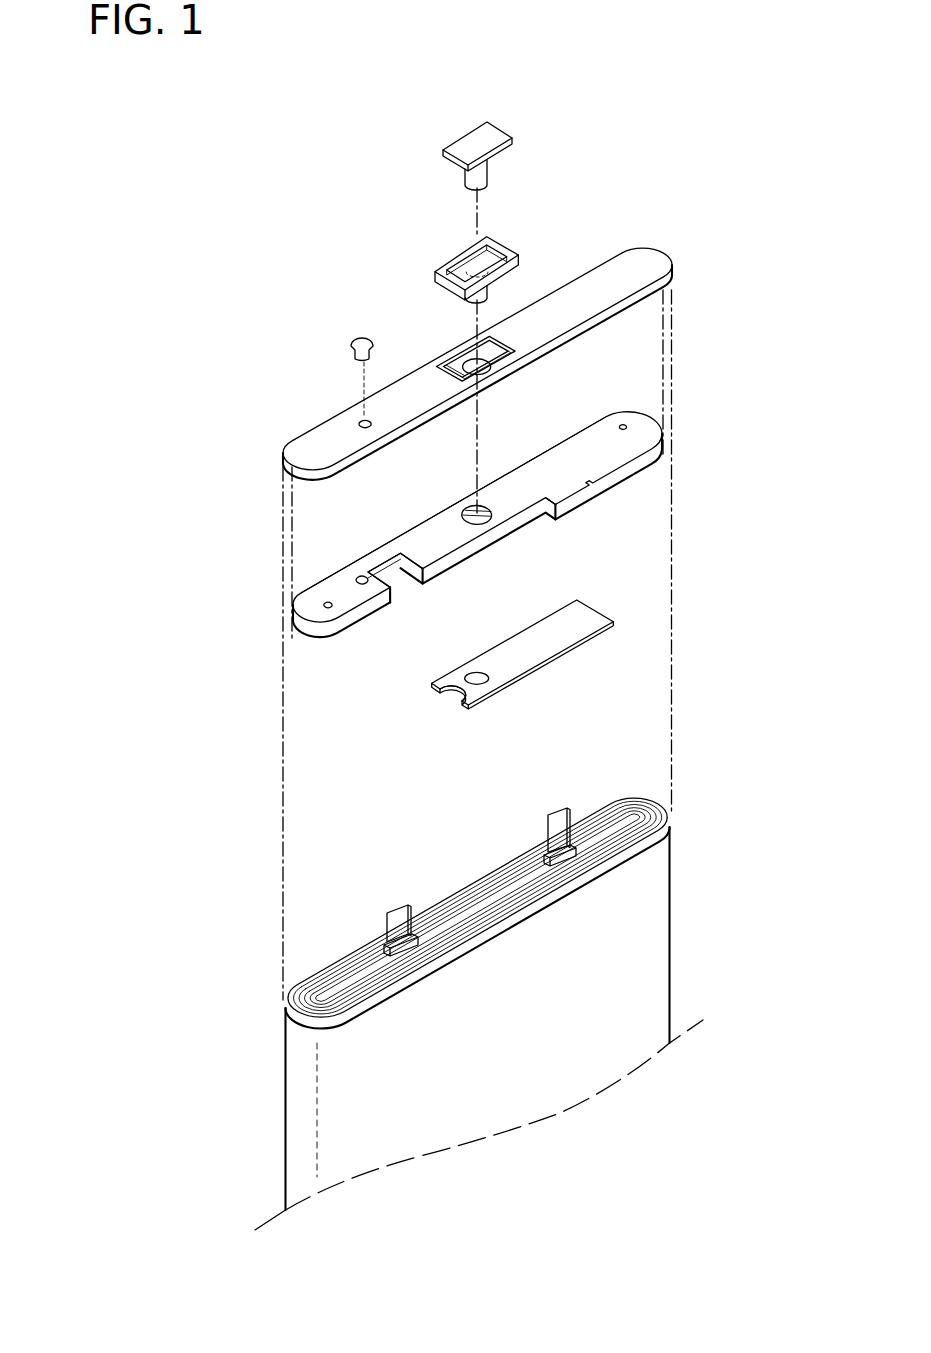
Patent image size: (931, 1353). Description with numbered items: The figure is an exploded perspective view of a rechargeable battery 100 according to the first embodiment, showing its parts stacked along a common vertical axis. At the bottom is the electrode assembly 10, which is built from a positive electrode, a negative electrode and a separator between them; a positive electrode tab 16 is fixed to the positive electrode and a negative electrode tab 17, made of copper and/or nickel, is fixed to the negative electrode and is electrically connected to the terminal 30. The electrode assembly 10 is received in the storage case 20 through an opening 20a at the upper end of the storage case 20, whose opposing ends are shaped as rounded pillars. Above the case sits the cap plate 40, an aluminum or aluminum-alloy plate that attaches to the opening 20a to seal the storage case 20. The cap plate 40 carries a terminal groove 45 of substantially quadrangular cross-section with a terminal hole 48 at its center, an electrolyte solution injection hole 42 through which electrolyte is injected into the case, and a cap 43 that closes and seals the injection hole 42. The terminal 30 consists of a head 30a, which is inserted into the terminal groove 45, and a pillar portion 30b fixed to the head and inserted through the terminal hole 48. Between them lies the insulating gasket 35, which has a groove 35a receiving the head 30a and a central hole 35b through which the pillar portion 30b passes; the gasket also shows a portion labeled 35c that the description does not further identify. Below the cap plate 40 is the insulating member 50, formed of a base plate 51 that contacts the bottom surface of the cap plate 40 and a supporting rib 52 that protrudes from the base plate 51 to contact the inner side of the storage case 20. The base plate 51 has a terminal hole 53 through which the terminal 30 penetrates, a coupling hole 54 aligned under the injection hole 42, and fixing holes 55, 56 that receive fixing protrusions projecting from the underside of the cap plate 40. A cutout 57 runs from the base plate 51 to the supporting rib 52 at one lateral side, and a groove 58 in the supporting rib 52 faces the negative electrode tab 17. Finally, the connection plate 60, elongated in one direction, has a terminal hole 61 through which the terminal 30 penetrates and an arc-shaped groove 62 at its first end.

The rechargeable battery 100 is at (284, 128).
The electrode assembly 10 is at (484, 907).
The positive electrode tab 16 is at (387, 915).
The negative electrode tab 17 is at (548, 814).
The storage case 20 is at (514, 1018).
The opening 20a is at (632, 858).
The terminal 30 is at (485, 144).
The head 30a is at (490, 128).
The pillar portion 30b is at (482, 170).
The insulating gasket 35 is at (469, 236).
The groove 35a is at (492, 252).
The hole 35b is at (444, 268).
The gasket protrusion 35c is at (490, 293).
The cap plate 40 is at (502, 334).
The electrolyte solution injection hole 42 is at (364, 421).
The cap 43 is at (352, 343).
The terminal groove 45 is at (436, 371).
The terminal hole 48 is at (488, 370).
The insulating member 50 is at (483, 527).
The base plate 51 is at (585, 457).
The supporting rib 52 is at (623, 463).
The terminal hole 53 is at (472, 510).
The coupling hole 54 is at (360, 579).
The fixing hole 55 is at (623, 426).
The fixing hole 56 is at (326, 603).
The cutout 57 is at (392, 590).
The groove 58 is at (552, 503).
The connection plate 60 is at (591, 681).
The terminal hole 61 is at (490, 678).
The groove 62 is at (444, 697).